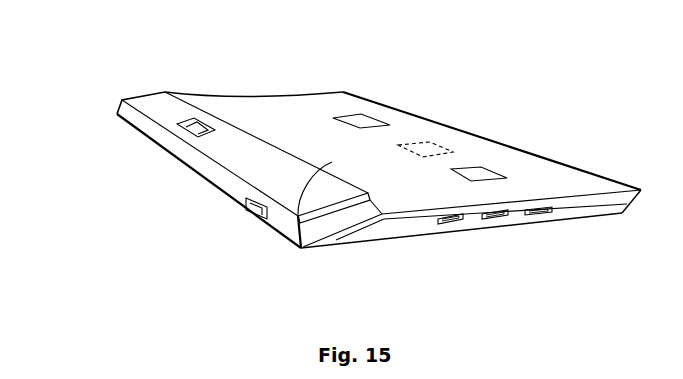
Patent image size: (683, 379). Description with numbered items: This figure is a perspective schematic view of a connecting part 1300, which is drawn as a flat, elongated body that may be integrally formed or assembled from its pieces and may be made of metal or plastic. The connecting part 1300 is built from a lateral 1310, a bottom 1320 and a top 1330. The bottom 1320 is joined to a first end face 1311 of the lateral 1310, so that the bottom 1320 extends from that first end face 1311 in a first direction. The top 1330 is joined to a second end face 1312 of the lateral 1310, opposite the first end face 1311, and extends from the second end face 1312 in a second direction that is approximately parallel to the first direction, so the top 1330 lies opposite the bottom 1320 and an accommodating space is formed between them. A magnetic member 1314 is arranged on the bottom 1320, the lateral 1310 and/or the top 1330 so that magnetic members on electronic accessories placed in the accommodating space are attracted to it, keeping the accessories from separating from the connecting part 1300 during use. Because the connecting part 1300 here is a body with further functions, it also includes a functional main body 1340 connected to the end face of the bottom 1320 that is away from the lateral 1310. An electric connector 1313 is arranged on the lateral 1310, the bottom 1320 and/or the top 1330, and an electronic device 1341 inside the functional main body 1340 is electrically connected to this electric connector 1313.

The connecting part 1300 is at (312, 44).
The lateral 1310 is at (153, 134).
The first end face 1311 is at (302, 251).
The second end face 1312 is at (302, 213).
The electric connector 1313 is at (250, 207).
The magnetic member 1314 is at (150, 95).
The bottom 1320 is at (336, 245).
The top 1330 is at (228, 151).
The functional main body 1340 is at (457, 195).
The electronic device 1341 is at (424, 152).